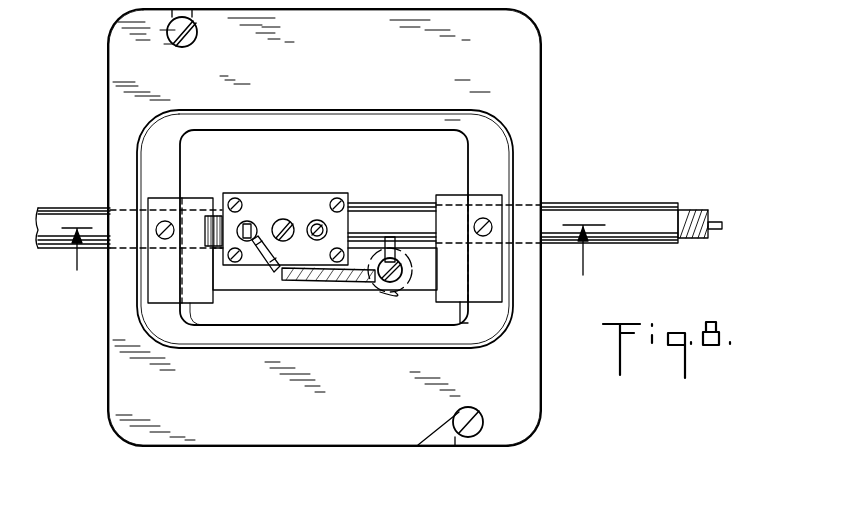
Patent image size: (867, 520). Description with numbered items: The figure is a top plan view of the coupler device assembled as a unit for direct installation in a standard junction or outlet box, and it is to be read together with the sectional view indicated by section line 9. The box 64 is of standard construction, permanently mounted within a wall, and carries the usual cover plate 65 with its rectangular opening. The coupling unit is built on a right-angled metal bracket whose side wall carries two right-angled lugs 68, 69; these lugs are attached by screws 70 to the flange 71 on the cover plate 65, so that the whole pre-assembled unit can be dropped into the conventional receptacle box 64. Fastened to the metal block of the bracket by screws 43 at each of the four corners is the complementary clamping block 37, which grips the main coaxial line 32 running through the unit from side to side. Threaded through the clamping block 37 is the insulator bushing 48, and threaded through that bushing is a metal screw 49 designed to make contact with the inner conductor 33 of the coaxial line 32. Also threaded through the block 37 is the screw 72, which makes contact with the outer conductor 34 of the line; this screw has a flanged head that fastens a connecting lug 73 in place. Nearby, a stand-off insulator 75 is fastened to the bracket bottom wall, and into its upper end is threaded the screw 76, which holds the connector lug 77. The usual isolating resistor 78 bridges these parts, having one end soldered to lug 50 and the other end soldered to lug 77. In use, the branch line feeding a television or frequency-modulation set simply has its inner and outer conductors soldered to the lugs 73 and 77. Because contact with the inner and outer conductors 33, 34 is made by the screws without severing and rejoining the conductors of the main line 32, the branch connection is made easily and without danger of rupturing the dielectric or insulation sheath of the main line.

The box 64 is at (545, 50).
The cover plate 65 is at (525, 108).
The flange 71 is at (485, 165).
The right-angled lug 69 is at (487, 292).
The right-angled lug 68 is at (163, 278).
The screws 70 is at (160, 226).
The section line 9 is at (320, 243).
The coaxial line 32 is at (656, 203).
The outer conductor 34 is at (690, 208).
The inner conductor 33 is at (722, 226).
The insulator bushing 48 is at (250, 228).
The screw 72 is at (318, 222).
The connecting lug 73 is at (320, 228).
The metal screw 49 is at (243, 232).
The lug 50 is at (222, 240).
The screws 43 is at (233, 262).
The clamping block 37 is at (264, 262).
The isolating resistor 78 is at (272, 277).
The connector lug 77 is at (395, 250).
The stand-off insulator 75 is at (405, 282).
The screw 76 is at (393, 292).